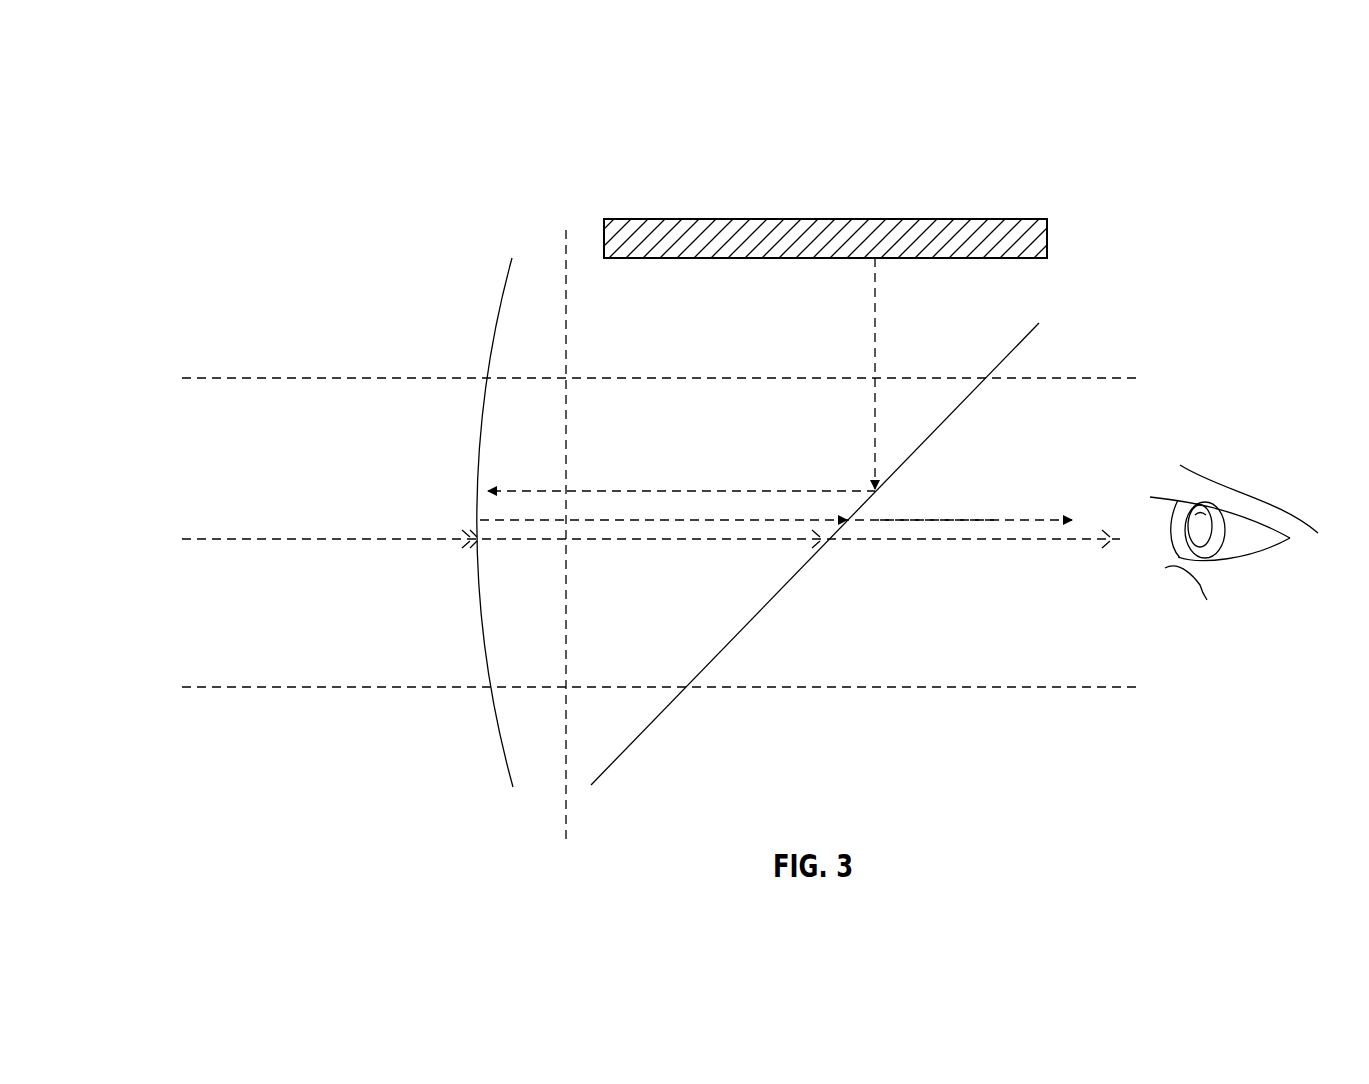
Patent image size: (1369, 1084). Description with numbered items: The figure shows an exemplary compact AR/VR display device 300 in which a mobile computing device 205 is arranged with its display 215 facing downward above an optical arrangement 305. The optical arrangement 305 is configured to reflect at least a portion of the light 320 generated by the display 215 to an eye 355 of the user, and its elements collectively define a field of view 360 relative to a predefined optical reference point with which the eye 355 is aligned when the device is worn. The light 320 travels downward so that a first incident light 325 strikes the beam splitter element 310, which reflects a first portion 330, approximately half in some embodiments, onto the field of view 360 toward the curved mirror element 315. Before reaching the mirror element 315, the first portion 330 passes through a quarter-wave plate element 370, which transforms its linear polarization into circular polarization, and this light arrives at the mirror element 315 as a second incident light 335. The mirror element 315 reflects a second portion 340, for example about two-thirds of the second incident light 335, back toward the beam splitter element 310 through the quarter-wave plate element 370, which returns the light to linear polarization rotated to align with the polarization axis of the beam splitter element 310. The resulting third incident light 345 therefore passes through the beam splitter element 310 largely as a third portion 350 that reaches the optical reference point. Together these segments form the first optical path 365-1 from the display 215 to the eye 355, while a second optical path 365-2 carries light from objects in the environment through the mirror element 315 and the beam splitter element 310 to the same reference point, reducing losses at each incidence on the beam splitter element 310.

The display device 300 is at (1230, 149).
The mobile computing device 205 is at (1000, 220).
The display 215 is at (828, 268).
The light 320 is at (876, 259).
The mirror element 315 is at (503, 298).
The beam splitter element 310 is at (1036, 328).
The quarter-wave plate element 370 is at (566, 822).
The first portion 330 is at (778, 489).
The second incident light 335 is at (485, 488).
The first incident light 325 is at (872, 488).
The third incident light 345 is at (845, 518).
The first optical path 365-1 is at (974, 518).
The third portion 350 is at (912, 522).
The second optical path 365-2 is at (250, 543).
The second portion 340 is at (490, 530).
The eye 355 is at (1250, 497).
The field of view 360 is at (170, 482).
The optical arrangement 305 is at (998, 727).